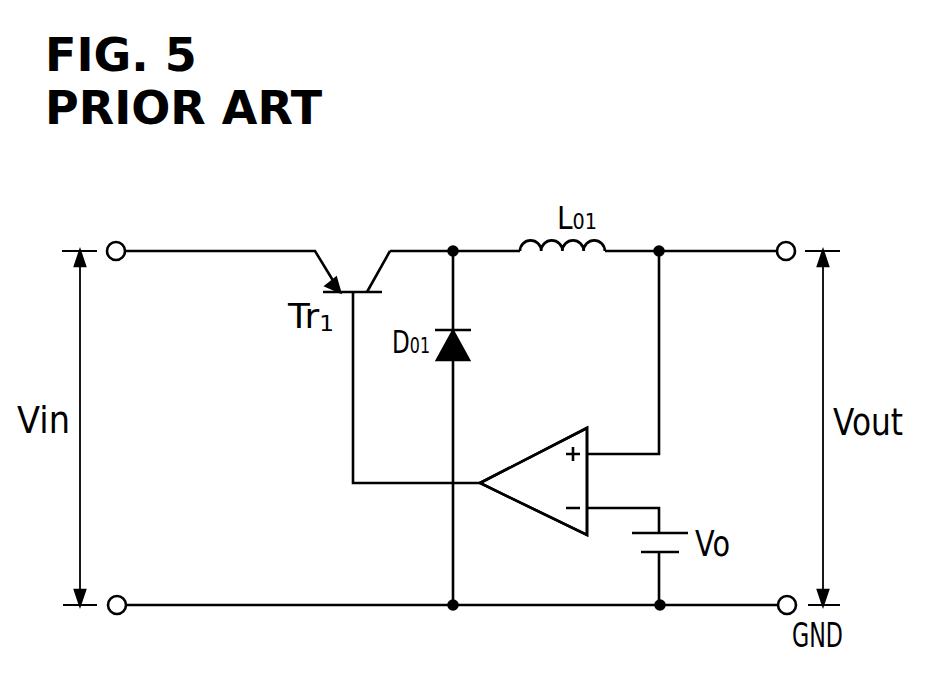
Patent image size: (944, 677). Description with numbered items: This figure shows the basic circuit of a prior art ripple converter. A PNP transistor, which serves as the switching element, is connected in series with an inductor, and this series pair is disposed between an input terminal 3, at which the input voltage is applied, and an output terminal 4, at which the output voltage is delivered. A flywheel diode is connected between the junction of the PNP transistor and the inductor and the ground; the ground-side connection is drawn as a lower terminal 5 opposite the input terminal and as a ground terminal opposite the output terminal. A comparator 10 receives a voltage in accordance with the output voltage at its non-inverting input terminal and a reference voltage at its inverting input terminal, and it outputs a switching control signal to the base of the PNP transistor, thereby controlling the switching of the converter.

The input terminal 3 is at (112, 243).
The output terminal 4 is at (782, 242).
The ground-side input terminal 5 is at (112, 614).
The comparator 10 is at (554, 436).